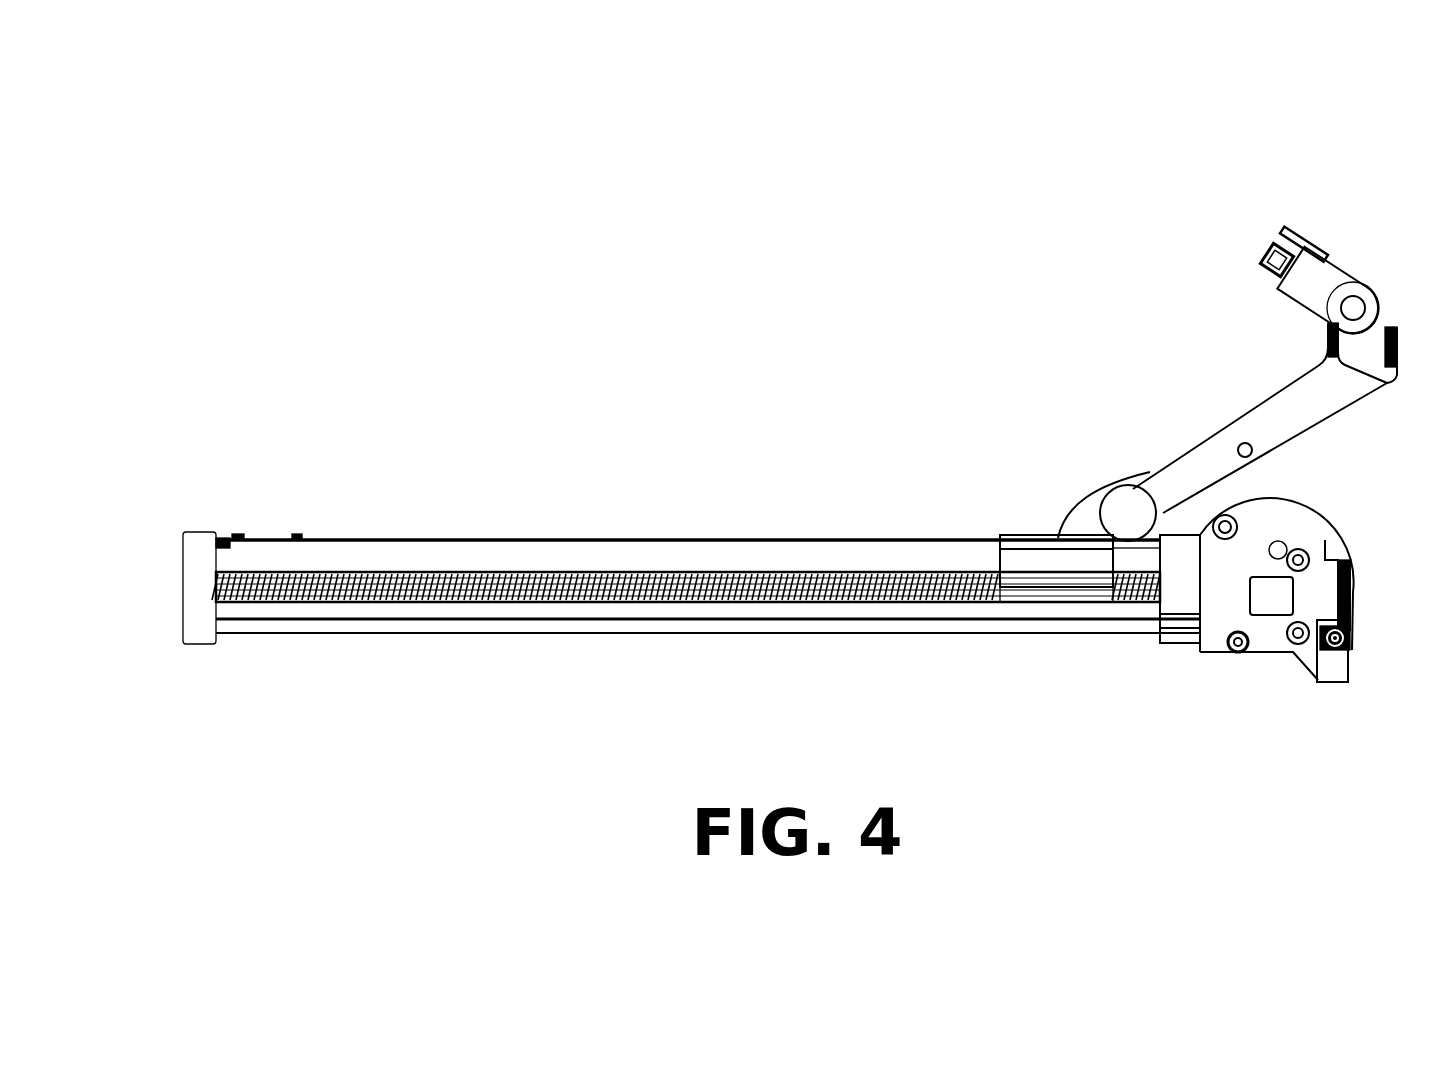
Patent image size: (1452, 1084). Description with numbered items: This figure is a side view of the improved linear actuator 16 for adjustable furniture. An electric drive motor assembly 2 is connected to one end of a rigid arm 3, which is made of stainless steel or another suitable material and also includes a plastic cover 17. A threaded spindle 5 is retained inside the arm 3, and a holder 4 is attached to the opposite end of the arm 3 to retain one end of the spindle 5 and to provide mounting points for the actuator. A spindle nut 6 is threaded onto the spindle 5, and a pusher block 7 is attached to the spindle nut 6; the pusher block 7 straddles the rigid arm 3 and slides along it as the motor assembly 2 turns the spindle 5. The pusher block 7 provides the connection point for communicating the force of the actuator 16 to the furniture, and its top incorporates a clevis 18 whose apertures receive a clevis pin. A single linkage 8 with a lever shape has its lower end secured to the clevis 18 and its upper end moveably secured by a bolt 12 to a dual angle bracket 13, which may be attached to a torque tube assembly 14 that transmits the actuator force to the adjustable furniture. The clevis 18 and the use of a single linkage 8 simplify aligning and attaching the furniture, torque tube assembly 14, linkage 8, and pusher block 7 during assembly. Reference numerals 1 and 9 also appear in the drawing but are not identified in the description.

The fastener 1 is at (1133, 514).
The electric drive motor assembly 2 is at (1340, 520).
The rigid arm 3 is at (575, 540).
The holder 4 is at (200, 550).
The threaded spindle 5 is at (420, 603).
The spindle nut 6 is at (1060, 590).
The pusher block 7 is at (998, 546).
The single linkage 8 is at (1205, 440).
The roller 9 is at (1120, 490).
The bolt 12 is at (1365, 292).
The dual angle bracket 13 is at (1331, 250).
The torque tube assembly 14 is at (1265, 222).
The linear actuator 16 is at (722, 271).
The plastic cover 17 is at (668, 616).
The clevis 18 is at (1077, 516).